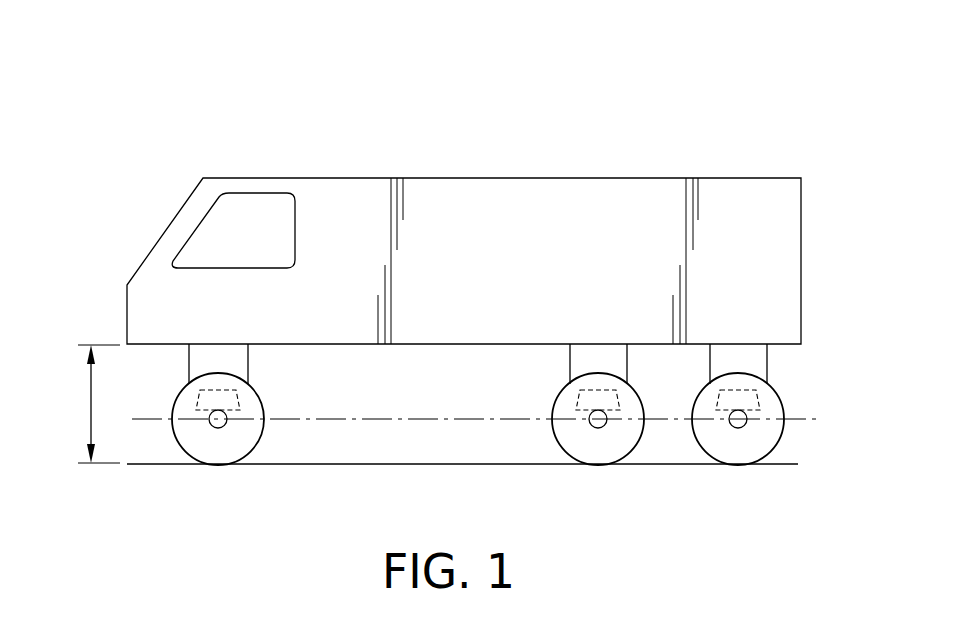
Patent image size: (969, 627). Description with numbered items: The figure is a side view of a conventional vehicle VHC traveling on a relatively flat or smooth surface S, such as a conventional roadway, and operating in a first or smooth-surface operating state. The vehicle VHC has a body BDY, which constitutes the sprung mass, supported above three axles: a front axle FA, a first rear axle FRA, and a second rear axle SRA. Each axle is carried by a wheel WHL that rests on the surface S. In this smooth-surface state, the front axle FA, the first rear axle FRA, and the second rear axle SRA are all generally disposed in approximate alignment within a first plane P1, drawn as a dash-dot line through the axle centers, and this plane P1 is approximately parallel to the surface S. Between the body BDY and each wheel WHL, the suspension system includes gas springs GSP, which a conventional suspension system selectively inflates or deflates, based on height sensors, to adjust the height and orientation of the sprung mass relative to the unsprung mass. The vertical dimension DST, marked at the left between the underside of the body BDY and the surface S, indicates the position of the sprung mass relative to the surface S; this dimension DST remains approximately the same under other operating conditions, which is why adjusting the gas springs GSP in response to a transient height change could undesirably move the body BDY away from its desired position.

The vehicle VHC is at (525, 155).
The body BDY is at (343, 178).
The gas spring GSP is at (238, 363).
The wheel WHL is at (185, 452).
The front axle FA is at (223, 423).
The first rear axle FRA is at (590, 427).
The second rear axle SRA is at (737, 427).
The first plane P1 is at (378, 420).
The surface S is at (435, 465).
The dimension DST is at (95, 404).